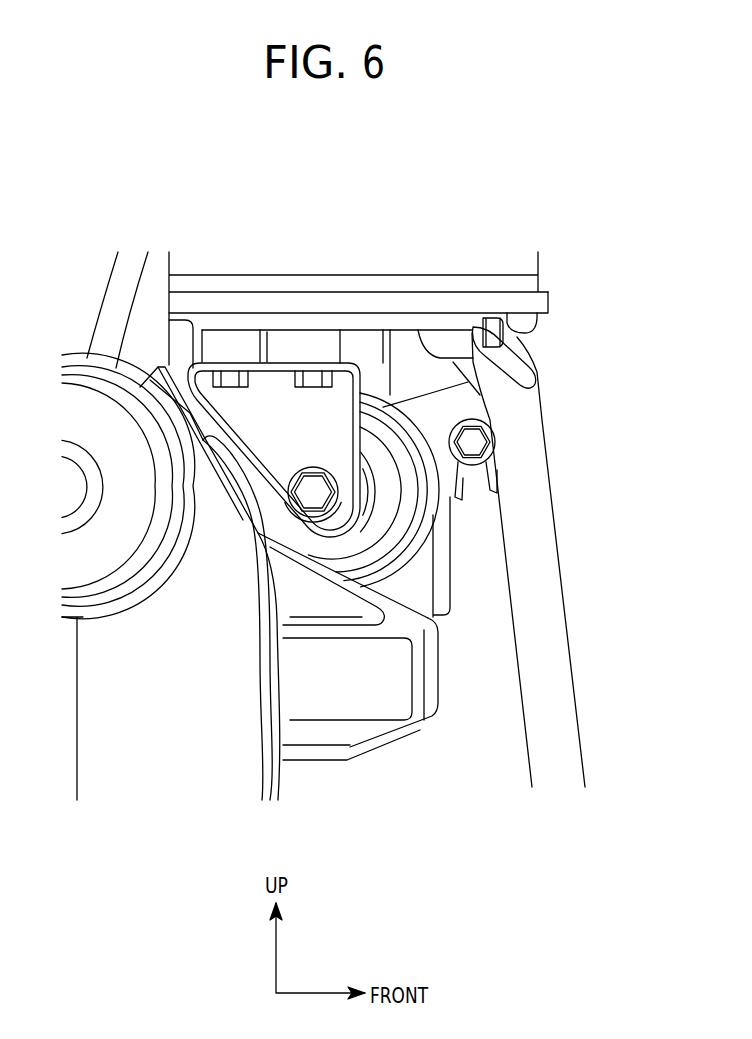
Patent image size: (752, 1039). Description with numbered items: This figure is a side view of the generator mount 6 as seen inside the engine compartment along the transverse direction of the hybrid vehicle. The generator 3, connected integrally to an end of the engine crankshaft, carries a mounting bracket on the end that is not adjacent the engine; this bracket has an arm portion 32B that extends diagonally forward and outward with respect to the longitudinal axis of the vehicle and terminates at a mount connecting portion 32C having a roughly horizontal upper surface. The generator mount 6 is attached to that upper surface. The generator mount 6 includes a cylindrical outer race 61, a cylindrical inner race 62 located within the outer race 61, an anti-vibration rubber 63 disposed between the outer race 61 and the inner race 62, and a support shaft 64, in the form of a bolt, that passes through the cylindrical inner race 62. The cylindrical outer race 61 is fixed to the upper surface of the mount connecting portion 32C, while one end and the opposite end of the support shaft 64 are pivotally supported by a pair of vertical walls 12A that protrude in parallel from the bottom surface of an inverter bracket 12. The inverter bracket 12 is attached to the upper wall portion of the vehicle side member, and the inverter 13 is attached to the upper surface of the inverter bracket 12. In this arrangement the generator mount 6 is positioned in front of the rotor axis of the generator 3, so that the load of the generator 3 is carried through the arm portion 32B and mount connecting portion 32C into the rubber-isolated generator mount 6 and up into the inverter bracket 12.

The inverter bracket 12 is at (350, 302).
The vertical walls 12A is at (282, 412).
The inverter 13 is at (540, 265).
The cylindrical outer race 61 is at (420, 398).
The cylindrical inner race 62 is at (363, 507).
The anti-vibration rubber 63 is at (388, 478).
The support shaft 64 is at (311, 494).
The generator mount 6 is at (446, 562).
The generator 3 is at (392, 583).
The arm portion 32B is at (343, 590).
The mount connecting portion 32C is at (433, 667).